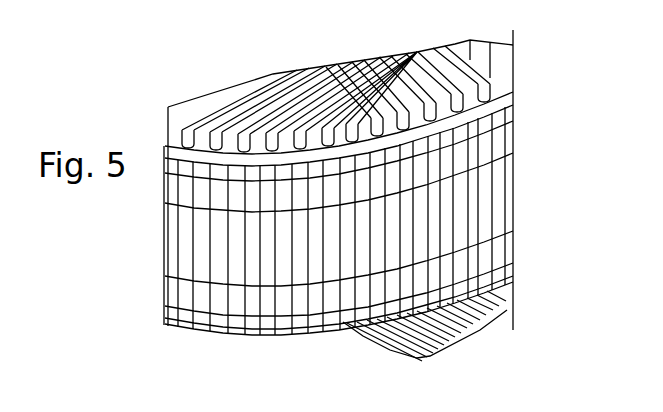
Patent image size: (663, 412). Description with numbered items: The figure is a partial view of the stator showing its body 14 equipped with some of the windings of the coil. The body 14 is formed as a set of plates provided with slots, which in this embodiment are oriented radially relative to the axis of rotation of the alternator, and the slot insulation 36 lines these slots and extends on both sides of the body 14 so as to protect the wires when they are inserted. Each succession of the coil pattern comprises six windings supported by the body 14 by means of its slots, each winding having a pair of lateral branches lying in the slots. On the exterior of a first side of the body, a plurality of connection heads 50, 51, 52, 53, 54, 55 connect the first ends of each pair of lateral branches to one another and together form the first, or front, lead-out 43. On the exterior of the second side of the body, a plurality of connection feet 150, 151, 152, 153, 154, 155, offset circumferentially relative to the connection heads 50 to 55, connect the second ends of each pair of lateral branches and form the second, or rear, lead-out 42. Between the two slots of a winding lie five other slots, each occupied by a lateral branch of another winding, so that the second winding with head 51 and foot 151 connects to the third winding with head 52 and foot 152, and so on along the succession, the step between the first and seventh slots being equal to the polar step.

The body 14 is at (167, 257).
The slot insulation 36 is at (513, 83).
The second lead-out 42 is at (333, 330).
The first lead-out 43 is at (240, 87).
The connection head 50 is at (270, 72).
The connection head 51 is at (307, 70).
The connection head 52 is at (332, 69).
The connection head 53 is at (366, 63).
The connection head 54 is at (390, 53).
The connection head 55 is at (417, 50).
The connection foot 150 is at (380, 340).
The connection foot 151 is at (455, 342).
The connection foot 152 is at (480, 333).
The connection foot 153 is at (493, 337).
The connection foot 154 is at (500, 310).
The connection foot 155 is at (505, 300).